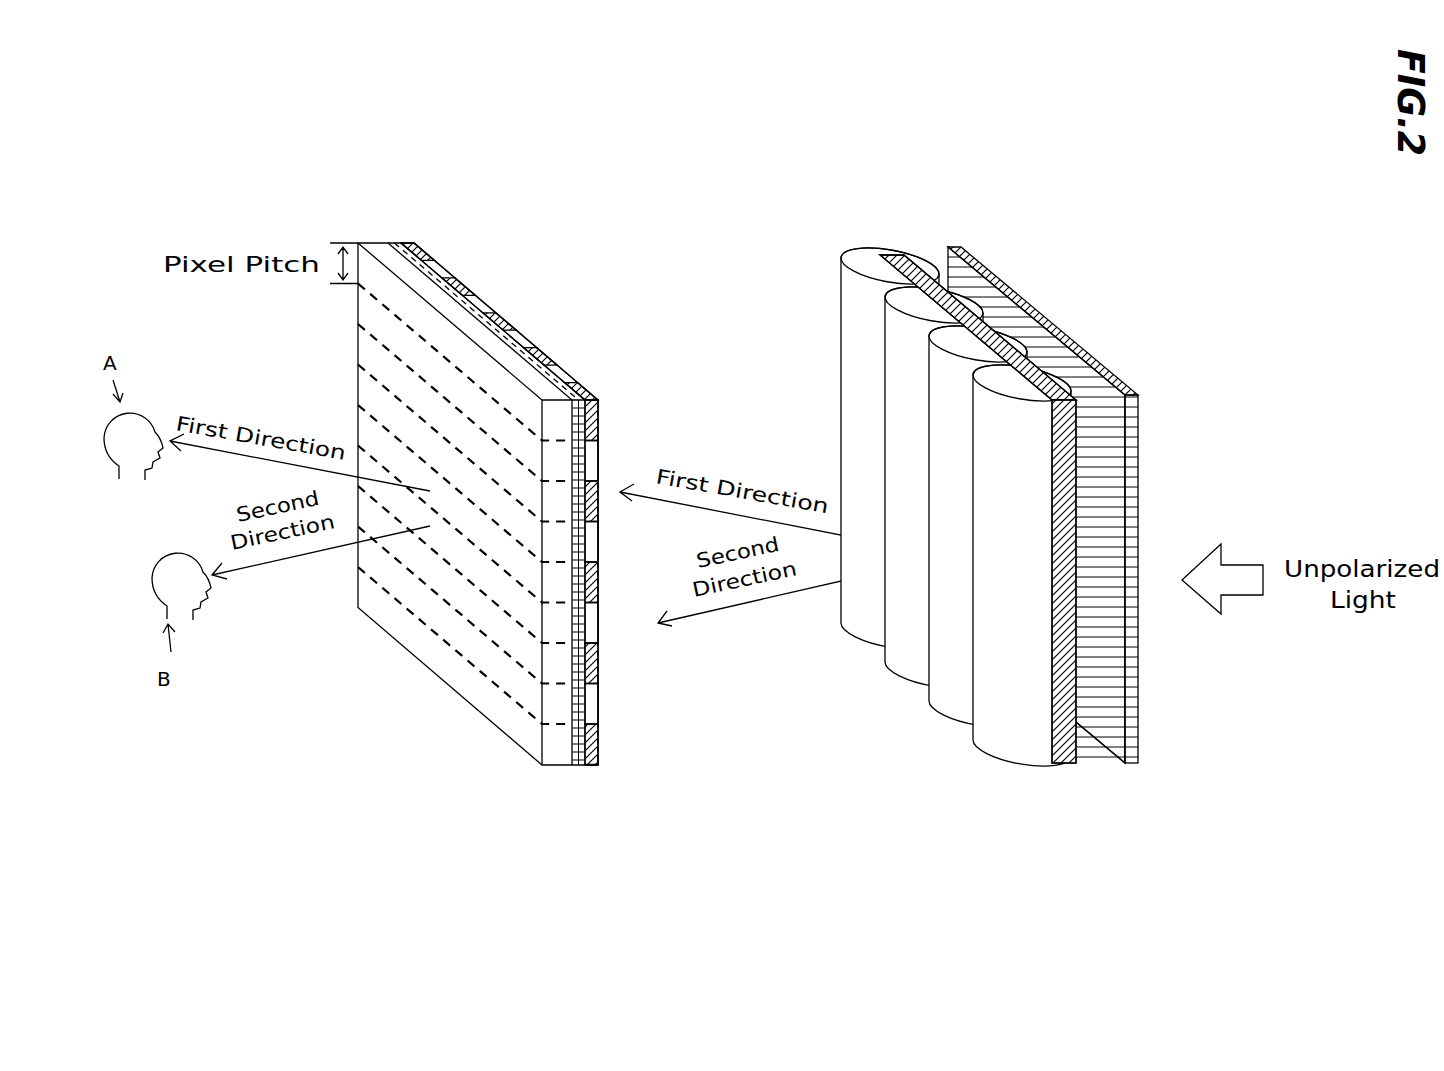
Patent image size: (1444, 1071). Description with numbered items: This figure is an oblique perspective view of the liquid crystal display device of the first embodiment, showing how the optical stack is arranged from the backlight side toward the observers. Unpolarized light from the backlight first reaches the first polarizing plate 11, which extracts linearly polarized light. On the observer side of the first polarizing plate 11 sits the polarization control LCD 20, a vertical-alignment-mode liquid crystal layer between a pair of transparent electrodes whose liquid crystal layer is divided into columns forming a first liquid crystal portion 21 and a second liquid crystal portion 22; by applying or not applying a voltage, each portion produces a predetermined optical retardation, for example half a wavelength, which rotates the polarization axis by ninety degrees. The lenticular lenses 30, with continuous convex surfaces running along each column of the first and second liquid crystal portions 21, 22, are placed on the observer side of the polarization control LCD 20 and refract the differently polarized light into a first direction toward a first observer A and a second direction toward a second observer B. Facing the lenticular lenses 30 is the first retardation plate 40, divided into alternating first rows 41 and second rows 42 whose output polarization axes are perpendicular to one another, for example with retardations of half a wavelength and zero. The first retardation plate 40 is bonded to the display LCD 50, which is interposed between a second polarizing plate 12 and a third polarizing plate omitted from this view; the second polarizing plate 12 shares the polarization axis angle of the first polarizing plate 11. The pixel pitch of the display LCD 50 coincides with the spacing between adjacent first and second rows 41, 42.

The display LCD 50 is at (379, 243).
The second polarizing plate 12 is at (400, 243).
The first retardation plate 40 is at (530, 492).
The first rows 41 is at (603, 747).
The second rows 42 is at (603, 706).
The lenticular lenses 30 is at (857, 258).
The polarization control LCD 20 is at (957, 445).
The first polarizing plate 11 is at (1063, 494).
The second liquid crystal portion 22 is at (1073, 350).
The first liquid crystal portion 21 is at (1131, 390).